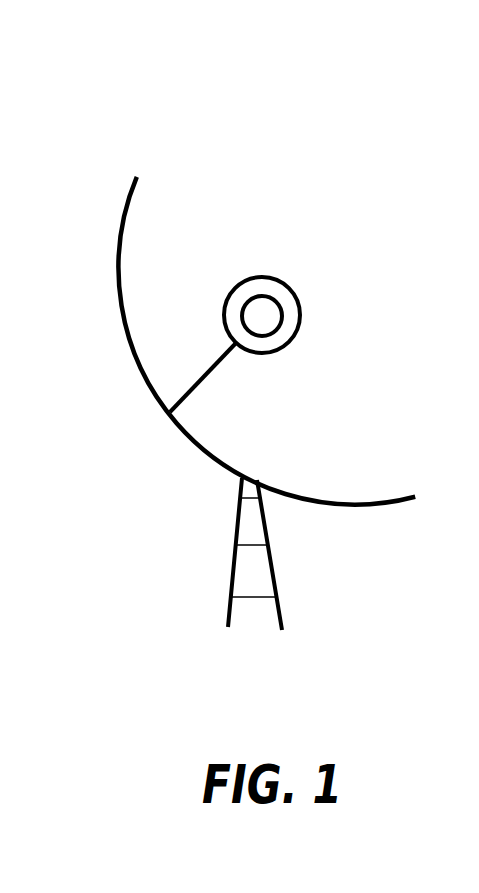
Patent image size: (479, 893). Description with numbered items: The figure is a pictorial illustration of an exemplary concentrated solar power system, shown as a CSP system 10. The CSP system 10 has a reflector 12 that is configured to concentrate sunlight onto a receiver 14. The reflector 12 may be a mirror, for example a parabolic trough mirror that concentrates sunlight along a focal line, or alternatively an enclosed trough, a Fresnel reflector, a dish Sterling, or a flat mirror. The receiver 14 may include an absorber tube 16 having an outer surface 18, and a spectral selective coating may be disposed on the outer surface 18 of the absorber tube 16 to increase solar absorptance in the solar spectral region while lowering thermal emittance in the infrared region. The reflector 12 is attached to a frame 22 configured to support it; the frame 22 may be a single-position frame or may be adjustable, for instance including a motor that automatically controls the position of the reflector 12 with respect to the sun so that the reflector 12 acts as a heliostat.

The CSP system 10 is at (345, 130).
The reflector 12 is at (137, 181).
The receiver 14 is at (272, 250).
The absorber tube 16 is at (253, 341).
The outer surface 18 is at (300, 327).
The frame 22 is at (233, 548).